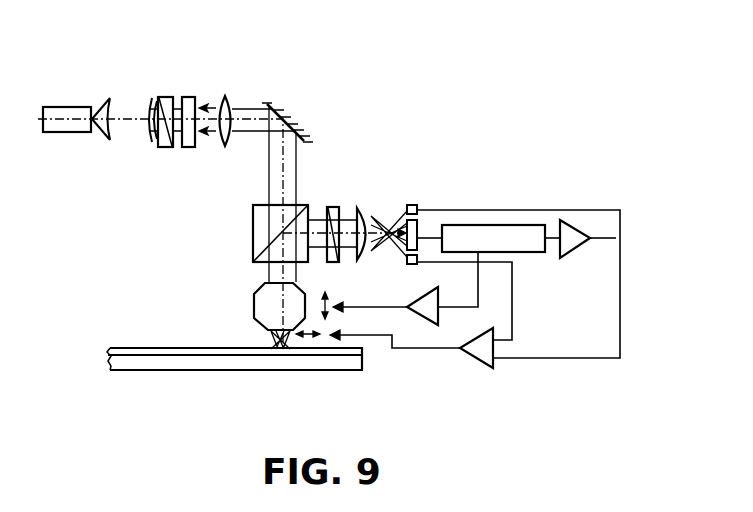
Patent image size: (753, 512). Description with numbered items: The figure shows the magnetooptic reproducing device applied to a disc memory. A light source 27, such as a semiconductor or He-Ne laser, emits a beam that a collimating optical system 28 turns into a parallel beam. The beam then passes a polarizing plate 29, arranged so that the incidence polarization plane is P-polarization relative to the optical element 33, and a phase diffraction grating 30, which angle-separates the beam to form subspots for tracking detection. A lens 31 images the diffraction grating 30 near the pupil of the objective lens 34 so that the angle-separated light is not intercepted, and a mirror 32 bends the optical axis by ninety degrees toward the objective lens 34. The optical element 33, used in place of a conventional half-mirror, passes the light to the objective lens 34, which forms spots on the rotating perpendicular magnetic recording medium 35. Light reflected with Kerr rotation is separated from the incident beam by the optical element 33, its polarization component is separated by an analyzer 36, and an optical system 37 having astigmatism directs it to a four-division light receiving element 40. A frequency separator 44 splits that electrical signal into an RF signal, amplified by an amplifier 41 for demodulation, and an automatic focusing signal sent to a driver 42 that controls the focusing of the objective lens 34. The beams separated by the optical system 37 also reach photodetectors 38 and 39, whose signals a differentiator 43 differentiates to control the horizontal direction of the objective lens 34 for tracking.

The light source 27 is at (64, 106).
The collimating optical system 28 is at (153, 100).
The polarizing plate 29 is at (164, 97).
The phase diffraction grating 30 is at (193, 97).
The lens 31 is at (228, 97).
The mirror 32 is at (298, 104).
The optical element 33 is at (253, 229).
The objective lens 34 is at (254, 312).
The perpendicular magnetic recording medium 35 is at (365, 369).
The analyzer 36 is at (331, 206).
The optical system having astigmatism 37 is at (359, 207).
The photodetector 38 is at (411, 205).
The photodetector 39 is at (405, 266).
The four-division light receiving element 40 is at (419, 224).
The amplifier 41 is at (575, 220).
The driver 42 is at (440, 300).
The differentiator 43 is at (483, 363).
The frequency separator 44 is at (488, 224).